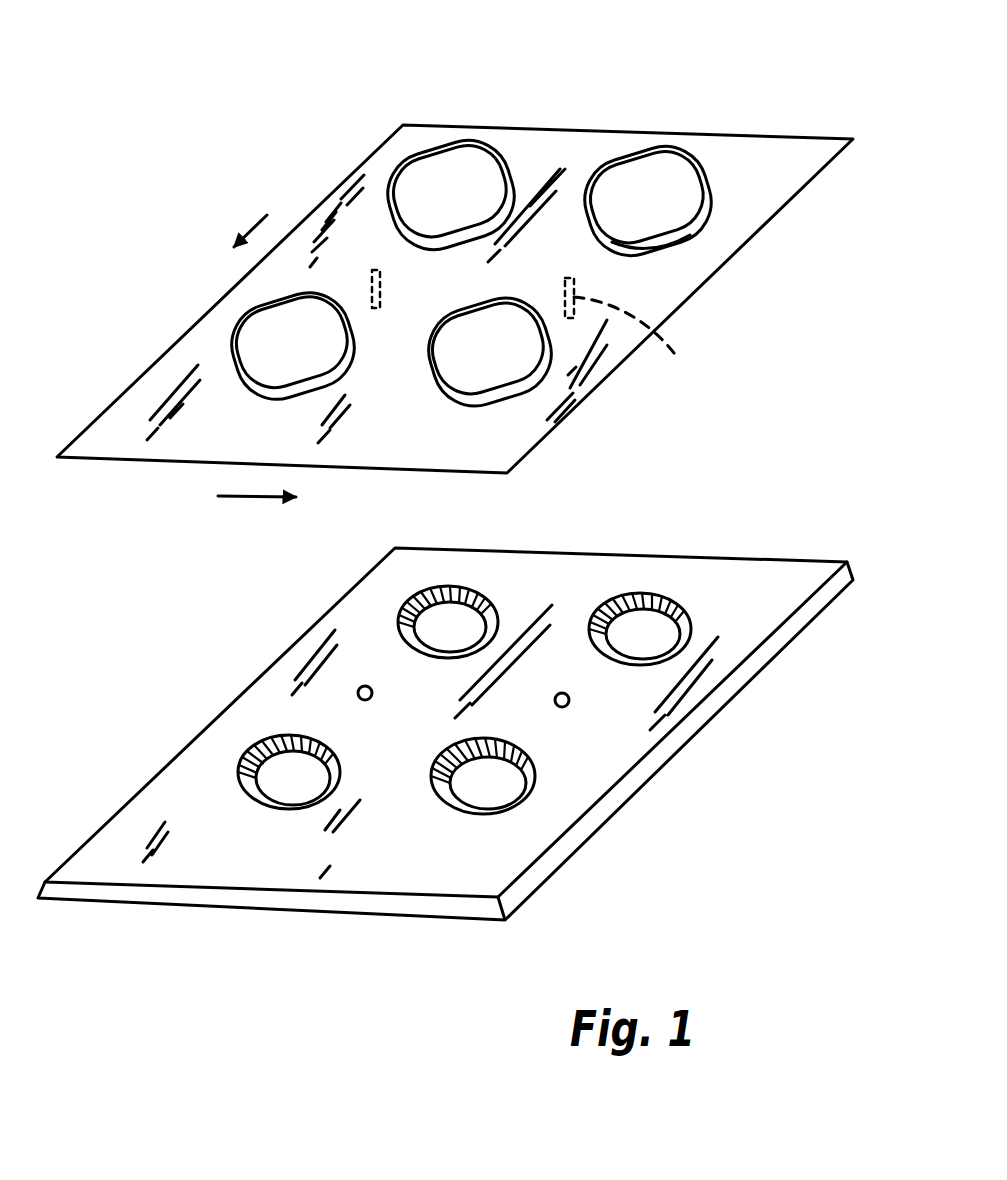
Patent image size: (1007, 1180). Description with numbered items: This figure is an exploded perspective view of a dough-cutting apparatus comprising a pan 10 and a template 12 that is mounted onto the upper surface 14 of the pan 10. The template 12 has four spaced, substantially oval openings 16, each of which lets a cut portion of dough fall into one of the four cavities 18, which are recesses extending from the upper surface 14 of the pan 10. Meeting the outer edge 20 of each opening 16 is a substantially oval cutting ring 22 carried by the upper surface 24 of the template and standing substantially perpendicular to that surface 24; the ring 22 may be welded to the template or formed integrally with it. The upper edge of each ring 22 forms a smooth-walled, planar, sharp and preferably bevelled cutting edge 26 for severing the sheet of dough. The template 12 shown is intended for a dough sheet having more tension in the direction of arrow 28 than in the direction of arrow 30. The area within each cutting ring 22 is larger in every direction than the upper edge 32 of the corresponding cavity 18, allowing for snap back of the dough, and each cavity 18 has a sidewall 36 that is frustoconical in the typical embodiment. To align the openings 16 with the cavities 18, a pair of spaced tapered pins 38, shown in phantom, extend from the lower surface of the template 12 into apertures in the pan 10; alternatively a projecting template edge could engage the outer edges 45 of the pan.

The pan 10 is at (790, 531).
The template 12 is at (632, 78).
The upper surface of the pan 14 is at (760, 608).
The openings 16 is at (453, 284).
The cavities 18 is at (442, 702).
The outer edge of opening 20 is at (668, 240).
The cutting ring 22 is at (457, 150).
The upper surface of the template 24 is at (550, 157).
The cutting edge 26 is at (477, 150).
The arrow 28 is at (243, 220).
The arrow 30 is at (257, 517).
The upper edge of cavity 32 is at (450, 587).
The sidewall 36 is at (445, 622).
The pins 38 is at (545, 330).
The outer edges of the pan 45 is at (573, 833).